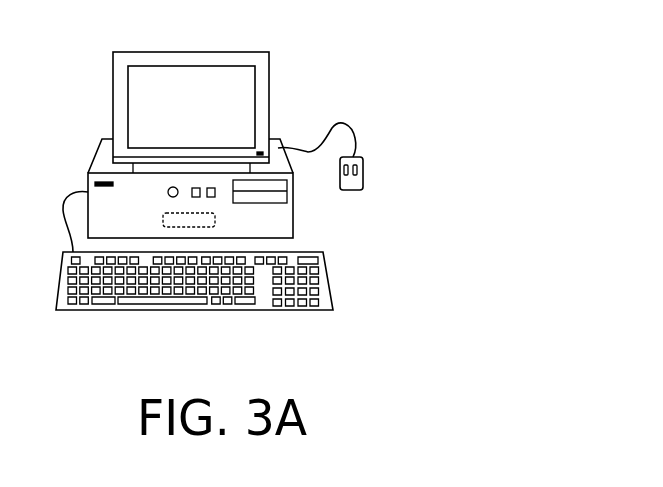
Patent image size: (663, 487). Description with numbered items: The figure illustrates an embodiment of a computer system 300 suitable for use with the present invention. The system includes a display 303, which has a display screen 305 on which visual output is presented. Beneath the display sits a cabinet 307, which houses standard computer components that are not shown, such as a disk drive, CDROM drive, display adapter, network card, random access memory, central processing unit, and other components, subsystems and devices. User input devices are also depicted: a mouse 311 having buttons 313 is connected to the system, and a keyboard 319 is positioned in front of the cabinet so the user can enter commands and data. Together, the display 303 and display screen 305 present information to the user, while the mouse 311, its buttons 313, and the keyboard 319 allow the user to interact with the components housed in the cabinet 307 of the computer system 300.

The computer system 300 is at (441, 40).
The display 303 is at (270, 85).
The display screen 305 is at (237, 73).
The cabinet 307 is at (282, 147).
The mouse 311 is at (365, 176).
The buttons 313 is at (352, 157).
The keyboard 319 is at (118, 312).